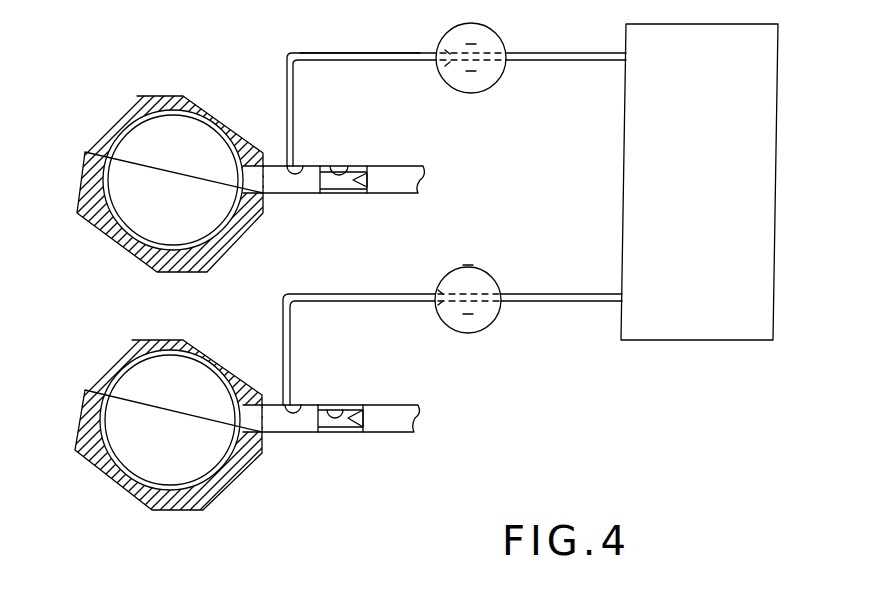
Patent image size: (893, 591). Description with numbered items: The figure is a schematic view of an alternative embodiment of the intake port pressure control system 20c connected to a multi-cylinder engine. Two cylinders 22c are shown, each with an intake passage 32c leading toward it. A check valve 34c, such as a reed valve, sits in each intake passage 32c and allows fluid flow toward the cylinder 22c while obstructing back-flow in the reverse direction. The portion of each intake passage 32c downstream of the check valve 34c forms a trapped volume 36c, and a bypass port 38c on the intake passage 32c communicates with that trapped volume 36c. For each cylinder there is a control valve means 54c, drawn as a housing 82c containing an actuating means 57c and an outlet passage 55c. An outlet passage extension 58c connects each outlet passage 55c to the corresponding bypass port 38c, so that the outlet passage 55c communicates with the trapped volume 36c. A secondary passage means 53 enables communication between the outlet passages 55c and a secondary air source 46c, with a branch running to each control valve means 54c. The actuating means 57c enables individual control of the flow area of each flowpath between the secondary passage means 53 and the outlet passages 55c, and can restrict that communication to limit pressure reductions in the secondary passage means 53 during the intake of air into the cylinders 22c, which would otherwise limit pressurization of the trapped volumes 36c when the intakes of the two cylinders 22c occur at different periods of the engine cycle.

The intake port pressure control system 20c is at (362, 44).
The cylinder 22c is at (140, 158).
The intake passage 32c is at (347, 166).
The check valve 34c is at (350, 193).
The trapped volume 36c is at (318, 177).
The bypass port 38c is at (312, 167).
The secondary air source 46c is at (662, 330).
The secondary passage means 53 is at (522, 61).
The control valve means 54c is at (507, 21).
The outlet passage 55c is at (440, 47).
The actuating means 57c is at (489, 77).
The outlet passage extension 58c is at (297, 83).
The housing 82c is at (477, 90).